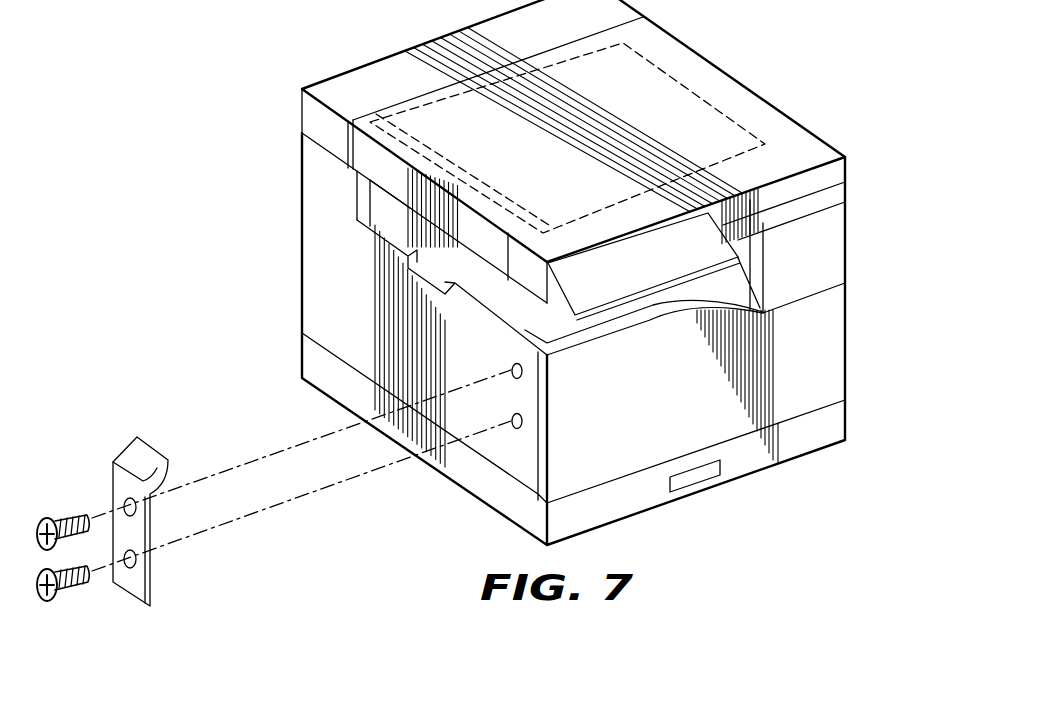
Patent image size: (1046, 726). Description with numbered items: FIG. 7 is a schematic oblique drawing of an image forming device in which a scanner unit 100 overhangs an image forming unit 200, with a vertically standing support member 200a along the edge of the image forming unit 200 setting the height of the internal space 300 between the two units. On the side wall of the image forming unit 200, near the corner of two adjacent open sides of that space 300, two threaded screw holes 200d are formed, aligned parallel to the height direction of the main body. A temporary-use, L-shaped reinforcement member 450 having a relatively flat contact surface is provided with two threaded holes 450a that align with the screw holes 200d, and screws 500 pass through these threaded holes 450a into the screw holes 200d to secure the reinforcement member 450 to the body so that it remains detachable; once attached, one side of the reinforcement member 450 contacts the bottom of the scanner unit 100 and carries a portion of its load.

The scanner unit 100 is at (783, 128).
The image forming unit 200 is at (838, 370).
The support member 200a is at (838, 242).
The screw holes 200d is at (523, 418).
The internal space 300 is at (408, 233).
The reinforcement member 450 is at (135, 455).
The threaded holes 450a is at (150, 556).
The screws 500 is at (66, 515).